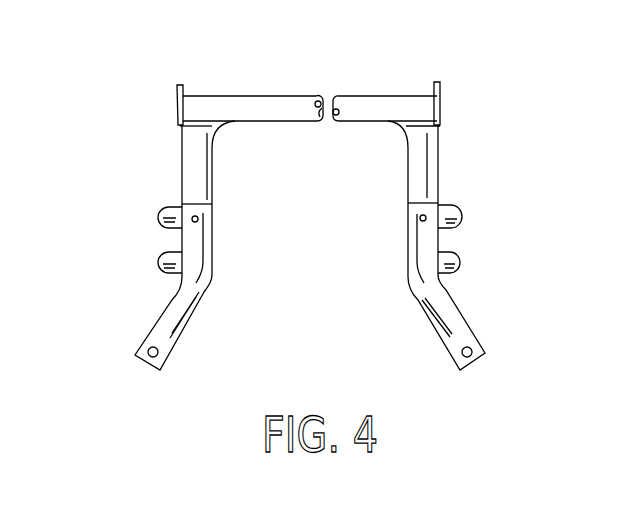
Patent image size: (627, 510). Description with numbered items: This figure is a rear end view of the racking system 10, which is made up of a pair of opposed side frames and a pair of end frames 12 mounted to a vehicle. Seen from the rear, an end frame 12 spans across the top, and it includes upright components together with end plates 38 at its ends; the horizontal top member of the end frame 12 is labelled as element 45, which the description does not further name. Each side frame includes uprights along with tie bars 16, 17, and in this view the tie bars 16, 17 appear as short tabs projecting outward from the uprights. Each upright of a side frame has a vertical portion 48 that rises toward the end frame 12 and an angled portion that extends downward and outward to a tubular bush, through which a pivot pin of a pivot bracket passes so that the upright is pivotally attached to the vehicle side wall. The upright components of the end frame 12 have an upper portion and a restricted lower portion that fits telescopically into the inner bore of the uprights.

The racking system 10 is at (162, 107).
The end frame 12 is at (372, 90).
The tie bar 16 is at (453, 260).
The tie bar 17 is at (452, 213).
The end plate 38 is at (190, 88).
The top bar 45 is at (297, 105).
The vertical portion 48 is at (418, 250).